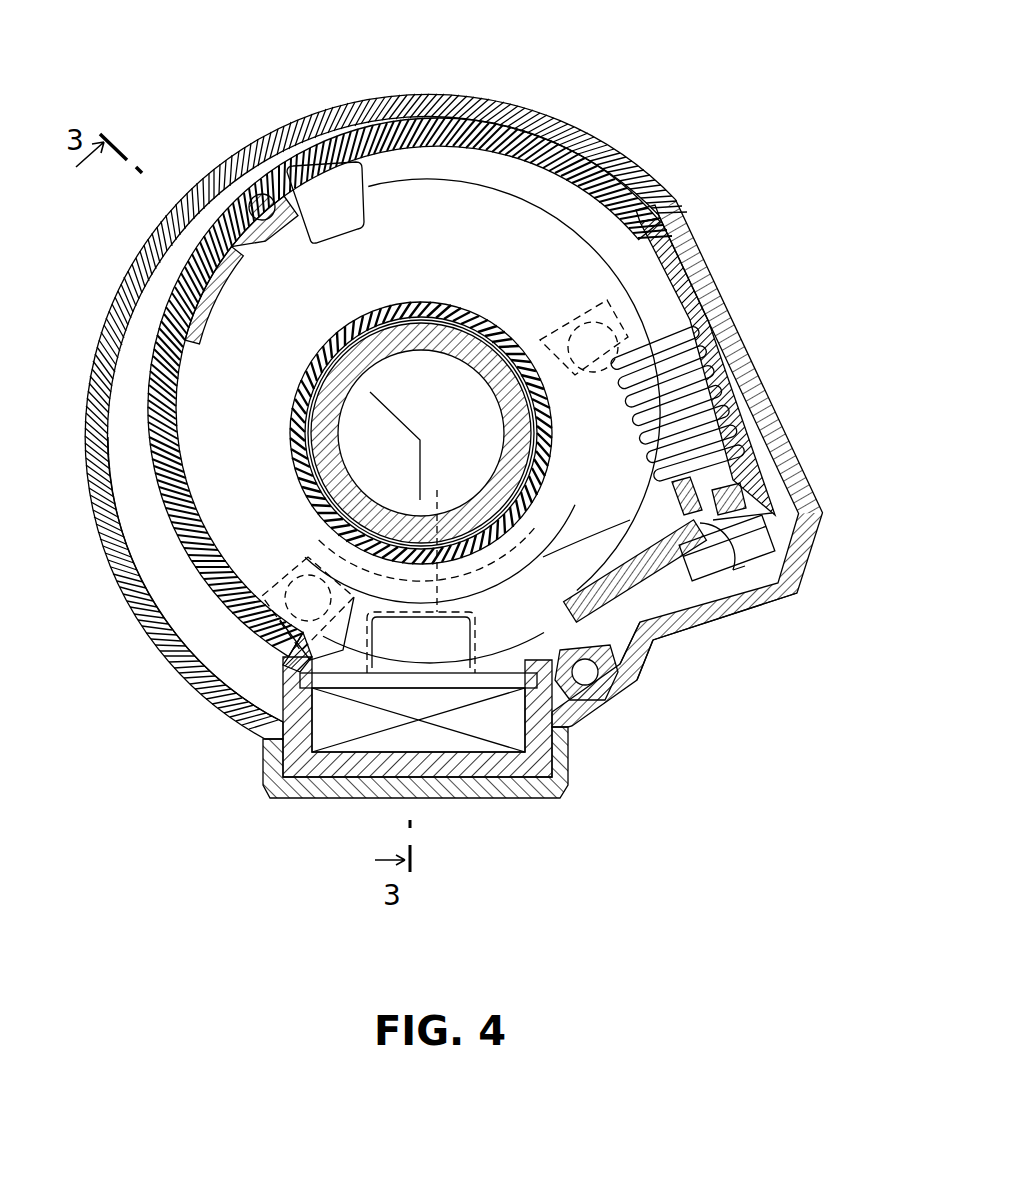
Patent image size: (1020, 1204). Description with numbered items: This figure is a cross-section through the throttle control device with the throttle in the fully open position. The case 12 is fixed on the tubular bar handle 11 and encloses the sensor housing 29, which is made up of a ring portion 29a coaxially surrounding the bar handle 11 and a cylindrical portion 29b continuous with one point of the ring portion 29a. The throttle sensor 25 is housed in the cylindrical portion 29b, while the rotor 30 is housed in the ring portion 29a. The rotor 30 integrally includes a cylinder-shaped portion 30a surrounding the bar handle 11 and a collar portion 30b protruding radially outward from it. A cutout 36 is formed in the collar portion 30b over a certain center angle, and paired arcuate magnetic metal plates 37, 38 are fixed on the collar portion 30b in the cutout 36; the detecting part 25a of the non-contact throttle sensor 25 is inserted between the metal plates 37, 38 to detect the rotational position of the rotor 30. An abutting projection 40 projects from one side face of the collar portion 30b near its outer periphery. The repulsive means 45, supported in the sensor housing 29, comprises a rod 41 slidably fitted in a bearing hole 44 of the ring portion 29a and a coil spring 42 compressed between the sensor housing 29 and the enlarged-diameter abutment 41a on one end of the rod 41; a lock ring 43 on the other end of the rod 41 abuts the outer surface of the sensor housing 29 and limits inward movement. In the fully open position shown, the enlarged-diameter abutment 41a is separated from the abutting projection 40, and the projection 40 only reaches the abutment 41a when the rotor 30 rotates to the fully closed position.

The case 12 is at (447, 97).
The abutting projection 40 is at (310, 172).
The rotor 30 is at (522, 203).
The cylinder-shaped portion 30a is at (432, 300).
The collar portion 30b is at (197, 420).
The enlarged-diameter abutment 41a is at (663, 320).
The spring 42 is at (728, 400).
The bearing hole 44 is at (775, 505).
The rod 41 is at (723, 503).
The lock ring 43 is at (800, 577).
The cutout 36 is at (543, 602).
The repulsive means 45 is at (730, 575).
The arcuate magnetic metal plate 37 is at (650, 677).
The arcuate magnetic metal plate 38 is at (647, 670).
The throttle sensor 25 is at (583, 742).
The detecting part 25a is at (439, 540).
The sensor housing 29 is at (183, 585).
The ring portion 29a is at (157, 497).
The cylindrical portion 29b is at (350, 760).
The bar handle 11 is at (320, 447).